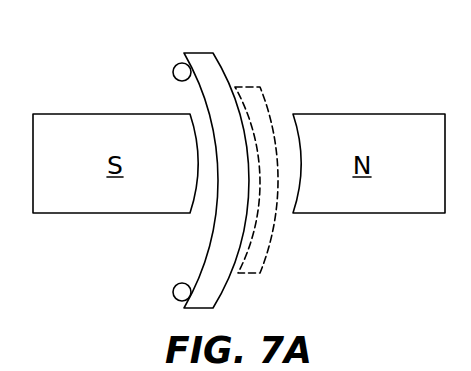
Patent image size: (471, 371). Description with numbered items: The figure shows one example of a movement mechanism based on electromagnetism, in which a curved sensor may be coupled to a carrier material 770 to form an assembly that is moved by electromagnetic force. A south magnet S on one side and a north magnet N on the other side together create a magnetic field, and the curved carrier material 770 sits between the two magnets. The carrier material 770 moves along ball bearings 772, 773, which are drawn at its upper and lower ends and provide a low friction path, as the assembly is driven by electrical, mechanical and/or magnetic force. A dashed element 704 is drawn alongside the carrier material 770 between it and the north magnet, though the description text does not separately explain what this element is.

The carrier material 770 is at (208, 82).
The magnet 704 is at (266, 116).
The ball bearing 772 is at (173, 72).
The ball bearing 773 is at (173, 292).